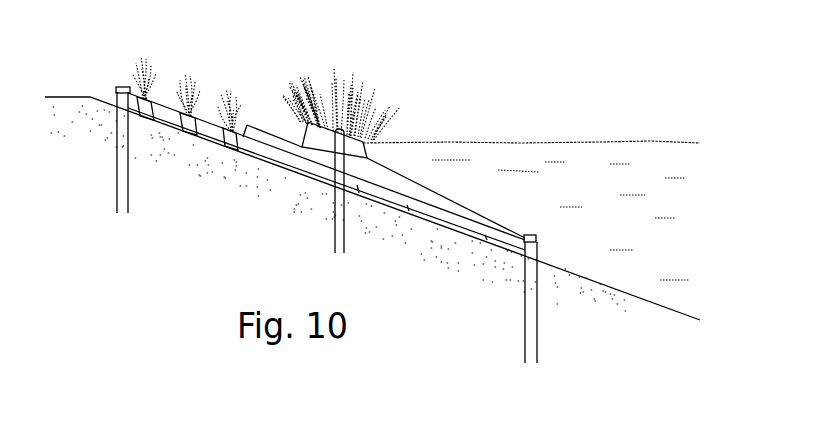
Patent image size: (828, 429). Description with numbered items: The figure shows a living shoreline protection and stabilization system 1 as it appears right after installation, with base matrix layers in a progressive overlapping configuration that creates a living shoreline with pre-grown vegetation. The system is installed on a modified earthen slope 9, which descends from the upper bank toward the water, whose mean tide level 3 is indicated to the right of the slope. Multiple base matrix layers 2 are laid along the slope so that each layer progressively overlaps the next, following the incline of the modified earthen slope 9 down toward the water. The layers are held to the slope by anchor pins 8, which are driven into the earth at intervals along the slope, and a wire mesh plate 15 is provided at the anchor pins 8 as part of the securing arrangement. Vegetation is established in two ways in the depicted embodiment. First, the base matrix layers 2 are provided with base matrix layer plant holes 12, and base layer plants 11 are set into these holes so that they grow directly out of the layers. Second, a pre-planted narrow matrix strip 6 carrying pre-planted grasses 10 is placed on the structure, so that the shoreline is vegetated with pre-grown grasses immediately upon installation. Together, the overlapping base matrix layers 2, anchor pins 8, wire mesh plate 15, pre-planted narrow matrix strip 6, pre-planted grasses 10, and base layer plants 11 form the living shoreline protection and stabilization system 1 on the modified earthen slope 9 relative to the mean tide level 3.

The living shoreline protection and stabilization system 1 is at (249, 124).
The base matrix layers 2 is at (307, 170).
The mean tide level 3 is at (620, 143).
The pre-planted narrow matrix strip 6 is at (367, 157).
The anchor pin 8 is at (128, 153).
The modified earthen slope 9 is at (66, 97).
The pre-planted grasses 10 is at (375, 104).
The base layer plants 11 is at (157, 72).
The base matrix layer plant holes 12 is at (233, 150).
The wire mesh plate 15 is at (119, 87).